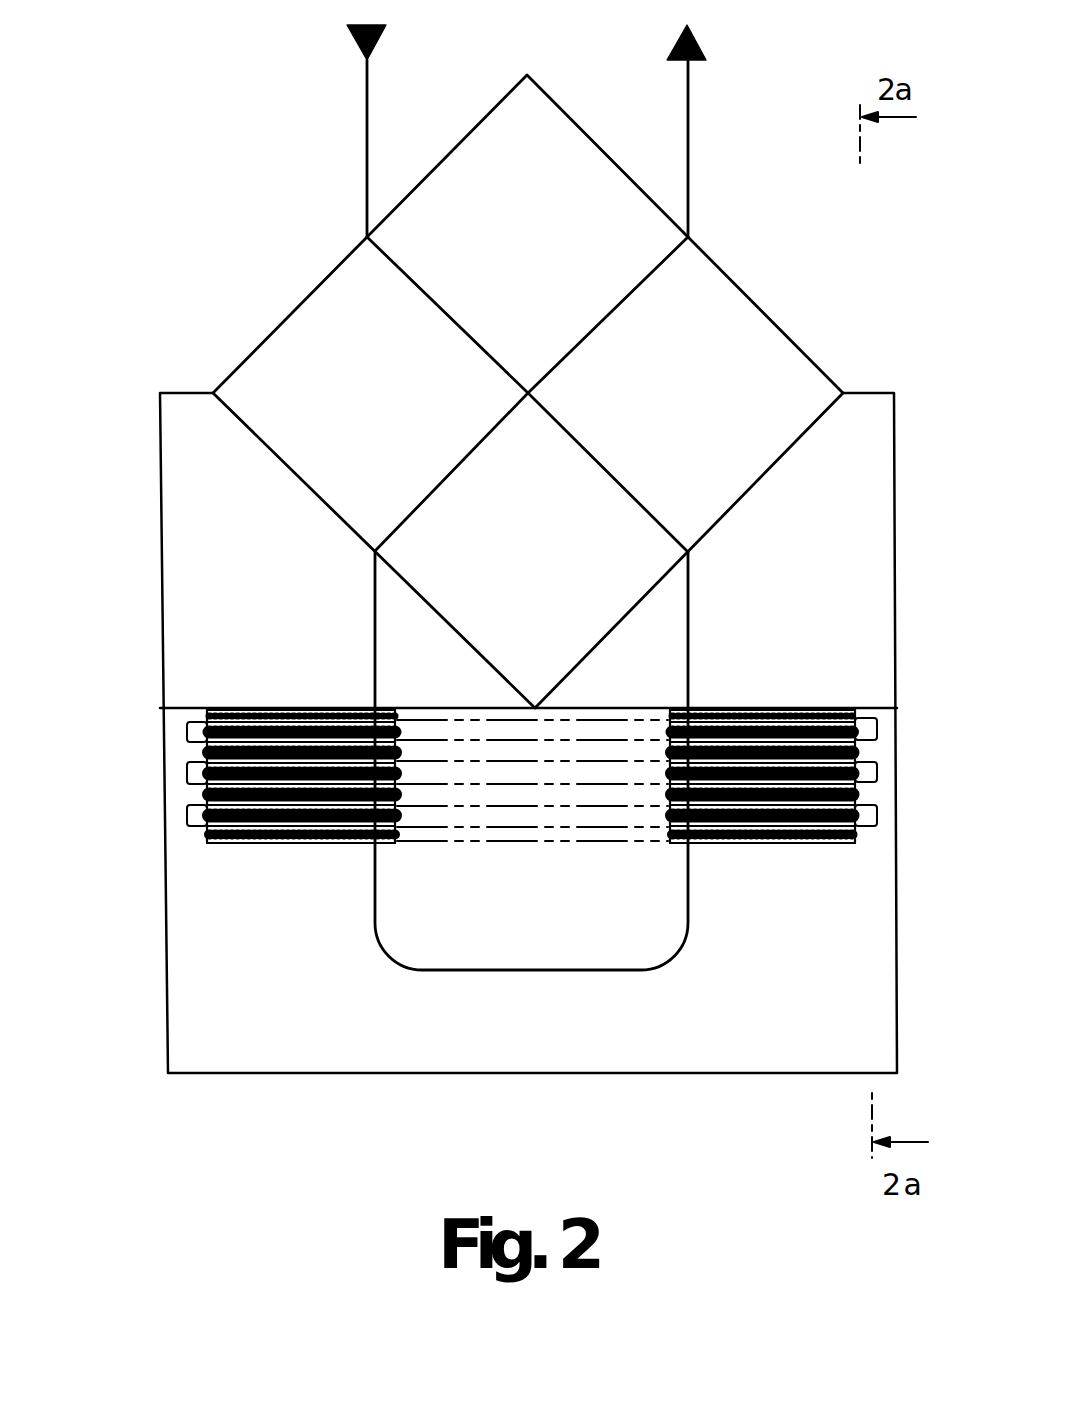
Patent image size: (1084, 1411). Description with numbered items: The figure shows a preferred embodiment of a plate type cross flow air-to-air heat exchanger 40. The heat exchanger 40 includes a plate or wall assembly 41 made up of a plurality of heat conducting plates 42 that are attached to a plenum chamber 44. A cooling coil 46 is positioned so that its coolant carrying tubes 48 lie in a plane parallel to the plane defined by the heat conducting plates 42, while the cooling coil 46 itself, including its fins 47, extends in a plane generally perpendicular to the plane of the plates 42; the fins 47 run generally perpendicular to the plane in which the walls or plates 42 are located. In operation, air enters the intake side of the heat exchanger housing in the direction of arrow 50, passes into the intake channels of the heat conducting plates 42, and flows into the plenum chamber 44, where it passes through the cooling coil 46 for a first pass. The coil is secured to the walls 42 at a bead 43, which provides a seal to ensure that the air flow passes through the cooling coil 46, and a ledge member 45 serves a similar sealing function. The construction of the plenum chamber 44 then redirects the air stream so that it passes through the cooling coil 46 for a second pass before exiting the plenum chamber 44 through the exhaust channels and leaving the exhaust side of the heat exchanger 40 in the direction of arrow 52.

The heat exchanger 40 is at (230, 222).
The plate or wall assembly 41 is at (757, 297).
The heat conducting plates 42 is at (248, 355).
The bead 43 is at (545, 705).
The plenum chamber 44 is at (160, 640).
The ledge member 45 is at (188, 708).
The cooling coil 46 is at (913, 693).
The fins 47 is at (808, 845).
The coolant carrying tubes 48 is at (877, 730).
The arrow 50 is at (366, 72).
The arrow 52 is at (690, 62).